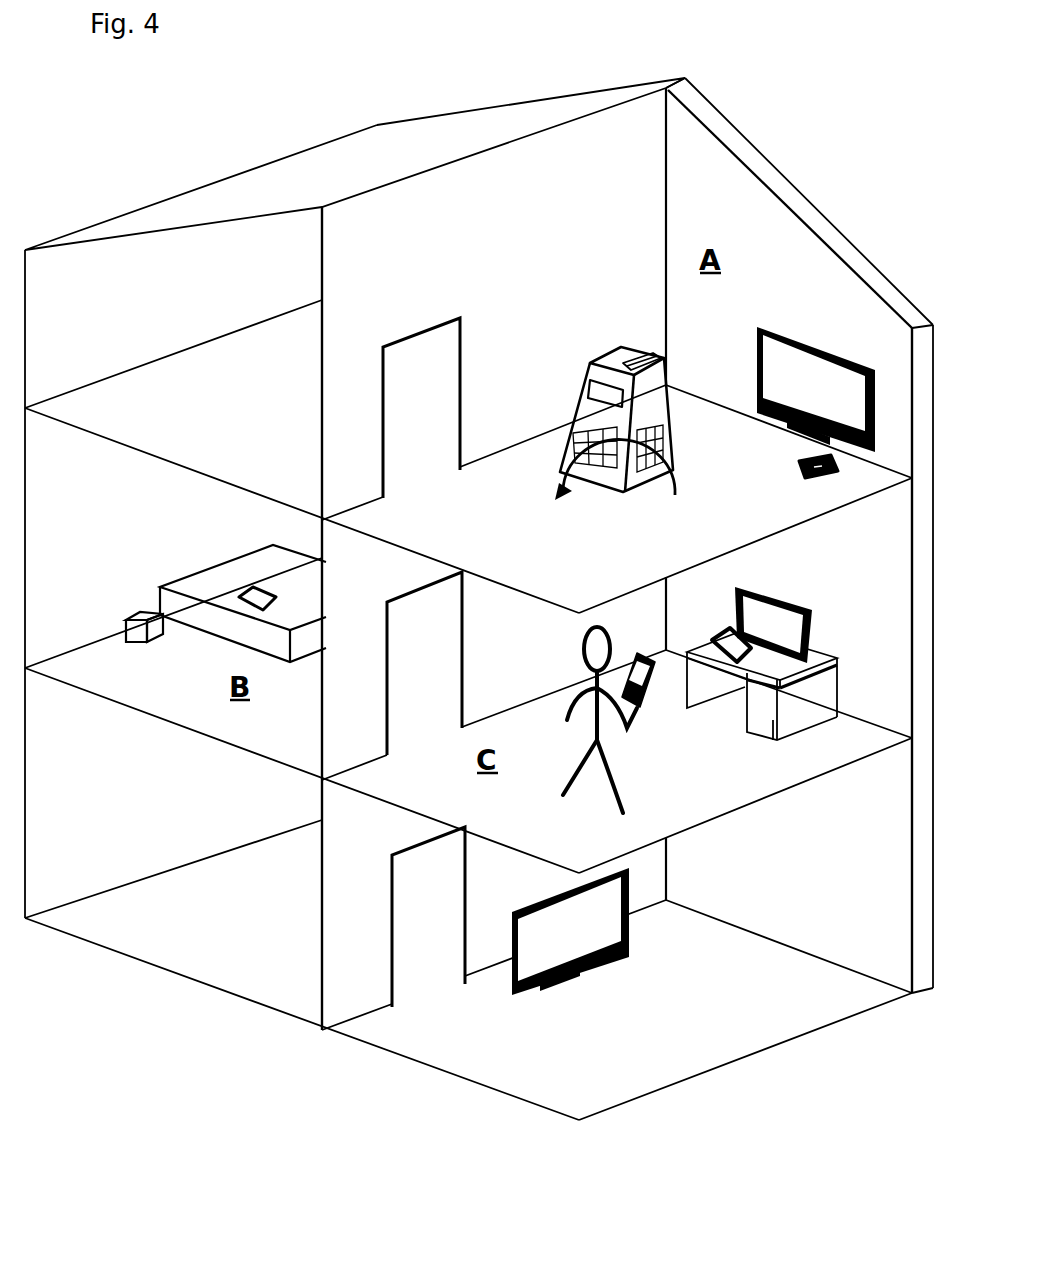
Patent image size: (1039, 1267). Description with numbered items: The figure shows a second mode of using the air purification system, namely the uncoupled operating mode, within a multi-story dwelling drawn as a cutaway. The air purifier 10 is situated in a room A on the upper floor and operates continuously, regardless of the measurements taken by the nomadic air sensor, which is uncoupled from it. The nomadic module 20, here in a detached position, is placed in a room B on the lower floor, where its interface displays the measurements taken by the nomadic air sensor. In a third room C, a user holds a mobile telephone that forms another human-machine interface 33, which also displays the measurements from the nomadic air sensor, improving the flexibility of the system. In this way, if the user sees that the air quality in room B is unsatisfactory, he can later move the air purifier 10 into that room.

The air purifier 10 is at (397, 304).
The nomadic module 20 is at (226, 600).
The human-machine interface 33 is at (681, 718).